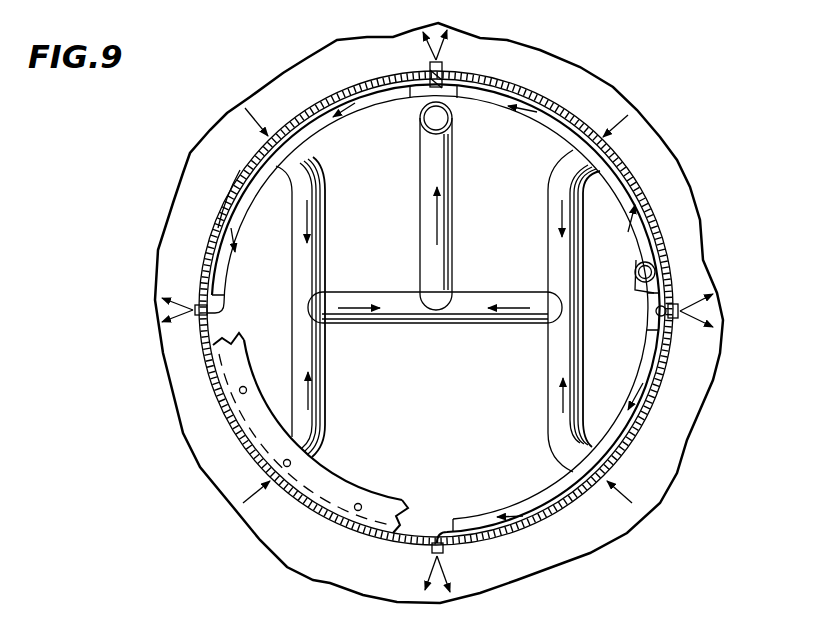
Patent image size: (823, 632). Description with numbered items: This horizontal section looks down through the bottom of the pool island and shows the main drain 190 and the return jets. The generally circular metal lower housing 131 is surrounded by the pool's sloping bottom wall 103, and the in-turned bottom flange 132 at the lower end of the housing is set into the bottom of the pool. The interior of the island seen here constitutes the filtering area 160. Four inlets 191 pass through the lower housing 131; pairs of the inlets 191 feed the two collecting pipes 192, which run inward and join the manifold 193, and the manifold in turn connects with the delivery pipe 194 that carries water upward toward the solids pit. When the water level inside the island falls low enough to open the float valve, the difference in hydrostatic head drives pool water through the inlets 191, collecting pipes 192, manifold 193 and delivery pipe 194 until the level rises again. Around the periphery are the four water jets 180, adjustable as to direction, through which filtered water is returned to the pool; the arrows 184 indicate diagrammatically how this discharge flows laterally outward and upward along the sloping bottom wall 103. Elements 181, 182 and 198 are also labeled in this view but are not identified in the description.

The sloping bottom wall 103 is at (188, 440).
The lower housing 131 is at (217, 227).
The bottom flange 132 is at (330, 490).
The filtering area 160 is at (485, 130).
The water jets 180 is at (442, 63).
The circumferential passage 181 is at (562, 114).
The fitting 182 is at (650, 262).
The arrows 184 is at (430, 48).
The main drain 190 is at (337, 167).
The inlets 191 is at (250, 163).
The collecting pipes 192 is at (323, 262).
The manifold 193 is at (400, 320).
The delivery pipe 194 is at (443, 168).
The seal 198 is at (258, 124).